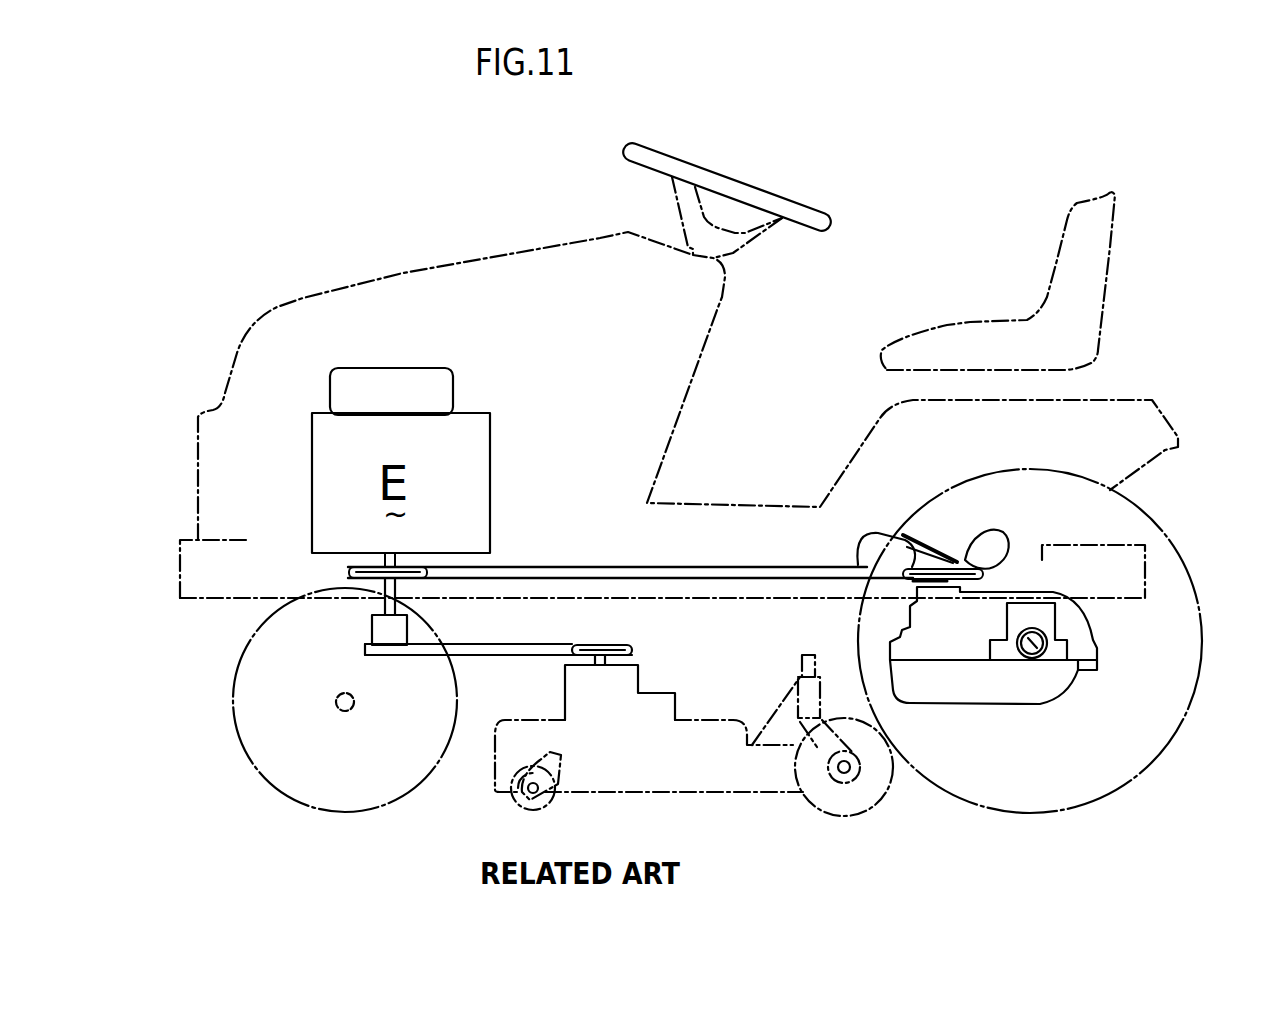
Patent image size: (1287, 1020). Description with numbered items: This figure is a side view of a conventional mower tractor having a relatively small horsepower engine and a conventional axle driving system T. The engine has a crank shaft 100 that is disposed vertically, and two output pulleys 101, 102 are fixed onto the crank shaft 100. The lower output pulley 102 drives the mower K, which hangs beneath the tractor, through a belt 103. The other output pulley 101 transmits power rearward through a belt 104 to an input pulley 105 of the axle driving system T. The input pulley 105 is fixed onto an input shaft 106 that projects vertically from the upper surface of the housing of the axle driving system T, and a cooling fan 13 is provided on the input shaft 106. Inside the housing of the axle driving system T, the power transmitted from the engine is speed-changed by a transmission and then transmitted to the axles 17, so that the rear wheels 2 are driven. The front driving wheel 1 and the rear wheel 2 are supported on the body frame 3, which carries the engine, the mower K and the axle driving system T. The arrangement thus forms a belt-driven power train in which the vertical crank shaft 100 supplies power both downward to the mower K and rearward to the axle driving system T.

The driving wheel 1 is at (232, 724).
The rear wheel 2 is at (1188, 714).
The body frame 3 is at (1147, 590).
The cooling fan 13 is at (988, 534).
The axle 17 is at (1033, 645).
The crank shaft 100 is at (348, 562).
The output pulley 101 is at (348, 577).
The output pulley 102 is at (372, 645).
The belt 103 is at (467, 643).
The belt 104 is at (577, 567).
The input pulley 105 is at (990, 575).
The input shaft 106 is at (905, 582).
The mower K is at (467, 780).
The axle driving system T is at (990, 719).